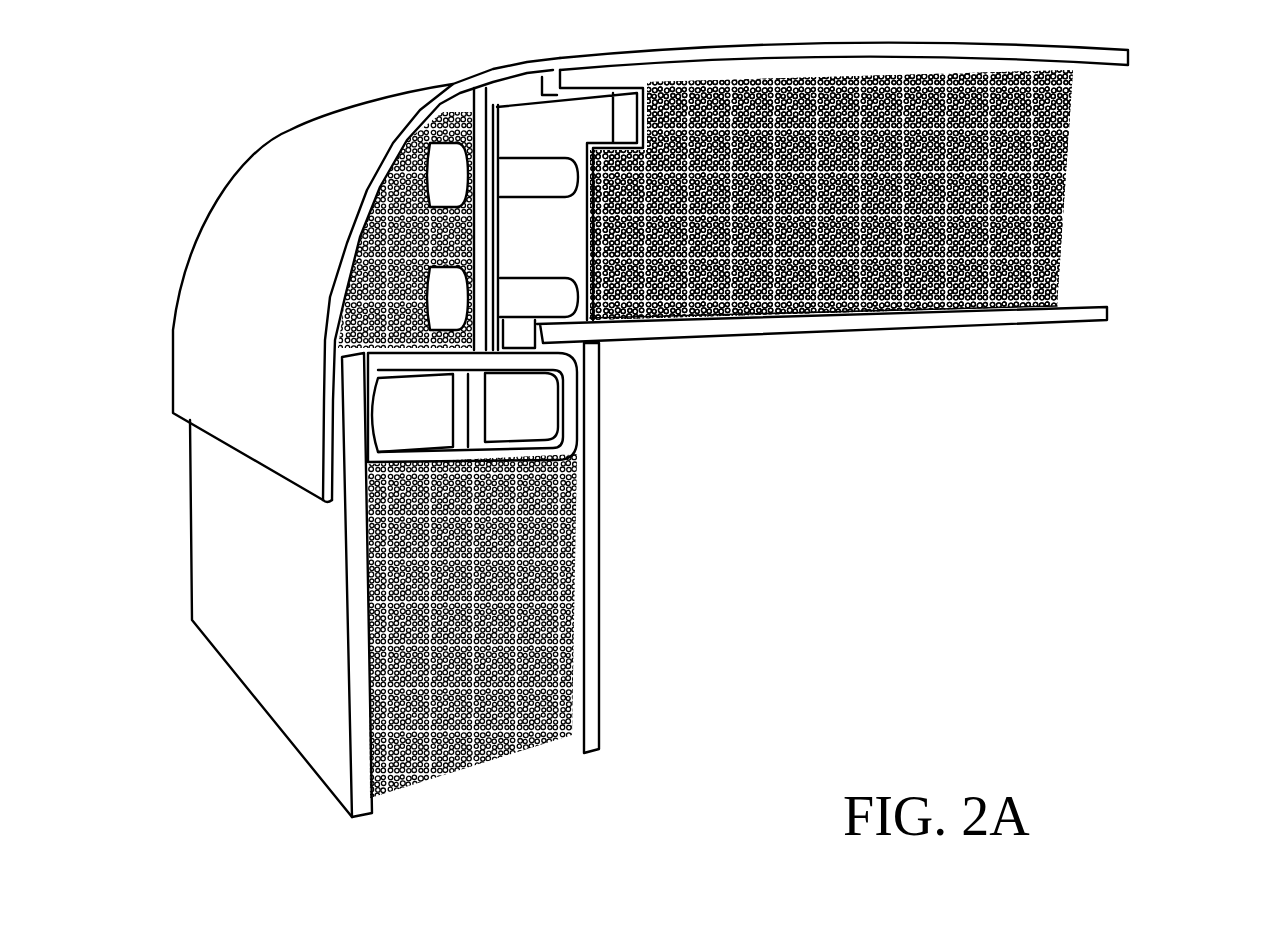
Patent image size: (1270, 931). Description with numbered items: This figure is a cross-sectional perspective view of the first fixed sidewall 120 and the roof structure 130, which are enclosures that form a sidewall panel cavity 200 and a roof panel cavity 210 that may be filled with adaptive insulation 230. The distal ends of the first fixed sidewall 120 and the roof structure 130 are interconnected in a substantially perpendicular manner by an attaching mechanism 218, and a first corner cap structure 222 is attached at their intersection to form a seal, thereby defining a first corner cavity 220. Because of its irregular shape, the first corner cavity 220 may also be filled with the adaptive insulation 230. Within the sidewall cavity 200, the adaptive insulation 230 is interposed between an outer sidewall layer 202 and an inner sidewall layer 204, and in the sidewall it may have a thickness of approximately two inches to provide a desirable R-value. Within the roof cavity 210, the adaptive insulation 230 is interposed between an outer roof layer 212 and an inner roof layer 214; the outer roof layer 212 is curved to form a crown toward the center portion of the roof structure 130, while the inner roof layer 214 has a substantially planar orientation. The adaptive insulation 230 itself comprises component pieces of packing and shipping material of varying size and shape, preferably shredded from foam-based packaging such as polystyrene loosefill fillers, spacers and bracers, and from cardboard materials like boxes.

The first fixed sidewall 120 is at (270, 648).
The roof structure 130 is at (878, 352).
The sidewall panel cavity 200 is at (478, 740).
The outer sidewall layer 202 is at (365, 812).
The inner sidewall layer 204 is at (592, 748).
The roof panel cavity 210 is at (1068, 220).
The outer roof layer 212 is at (1130, 60).
The inner roof layer 214 is at (1110, 313).
The attaching mechanism 218 is at (530, 297).
The first corner cavity 220 is at (378, 314).
The first corner cap structure 222 is at (313, 190).
The adaptive insulation 230 is at (405, 215).